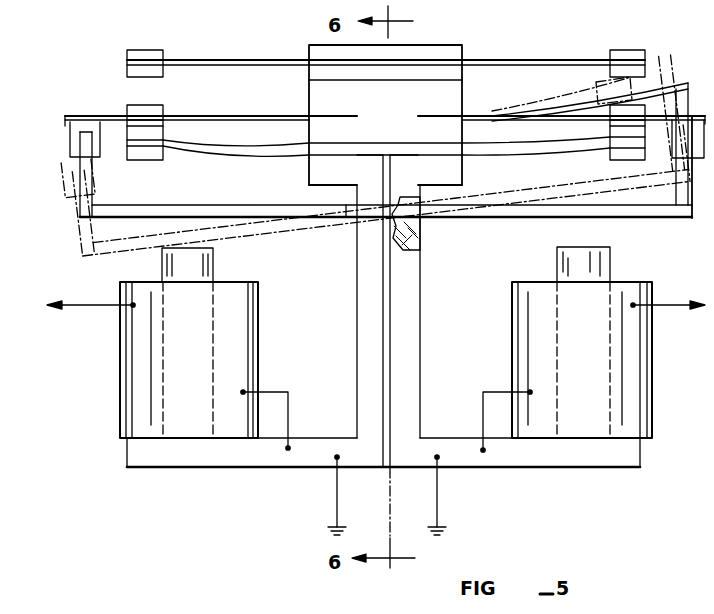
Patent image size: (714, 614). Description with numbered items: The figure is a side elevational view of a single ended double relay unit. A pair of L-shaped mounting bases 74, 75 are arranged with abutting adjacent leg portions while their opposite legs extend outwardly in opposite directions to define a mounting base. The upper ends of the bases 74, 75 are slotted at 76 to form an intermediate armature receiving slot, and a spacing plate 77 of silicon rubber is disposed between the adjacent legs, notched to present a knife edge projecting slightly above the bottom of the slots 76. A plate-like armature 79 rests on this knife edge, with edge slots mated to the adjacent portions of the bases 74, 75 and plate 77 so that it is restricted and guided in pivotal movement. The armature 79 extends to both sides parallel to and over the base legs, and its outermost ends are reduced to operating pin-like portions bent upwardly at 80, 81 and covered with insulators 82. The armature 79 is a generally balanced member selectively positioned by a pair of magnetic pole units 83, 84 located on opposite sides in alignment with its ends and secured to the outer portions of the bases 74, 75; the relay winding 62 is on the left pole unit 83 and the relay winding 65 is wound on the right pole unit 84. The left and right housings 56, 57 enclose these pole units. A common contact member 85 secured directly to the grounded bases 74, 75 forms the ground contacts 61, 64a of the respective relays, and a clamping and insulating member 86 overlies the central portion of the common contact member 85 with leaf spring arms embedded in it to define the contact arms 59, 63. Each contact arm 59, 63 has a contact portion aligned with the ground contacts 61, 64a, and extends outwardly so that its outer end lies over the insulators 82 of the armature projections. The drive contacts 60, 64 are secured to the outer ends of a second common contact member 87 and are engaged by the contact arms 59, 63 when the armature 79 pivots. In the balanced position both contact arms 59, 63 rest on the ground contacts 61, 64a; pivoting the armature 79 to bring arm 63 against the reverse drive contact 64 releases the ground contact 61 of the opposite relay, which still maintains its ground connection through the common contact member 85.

The left solenoid housing 56 is at (173, 348).
The right solenoid housing 57 is at (586, 344).
The contact arm 59 is at (261, 114).
The drive contact 60 is at (135, 52).
The ground contact 61 is at (160, 153).
The relay winding 62 is at (245, 326).
The contact arm 63 is at (486, 96).
The reverse drive contact 64 is at (633, 52).
The ground contact 64a is at (618, 136).
The relay winding 65 is at (518, 337).
The L-shaped mounting base 74 is at (362, 356).
The L-shaped mounting base 75 is at (413, 328).
The armature receiving slot 76 is at (418, 236).
The spacing plate 77 is at (386, 294).
The armature 79 is at (236, 201).
The upwardly bent pin-like portion 80 is at (685, 193).
The upwardly bent pin-like portion 81 is at (88, 185).
The insulator 82 is at (70, 128).
The magnetic pole unit 83 is at (205, 263).
The magnetic pole unit 84 is at (562, 255).
The common contact member 85 is at (484, 156).
The clamping and insulating member 86 is at (455, 137).
The common contact member 87 is at (417, 62).